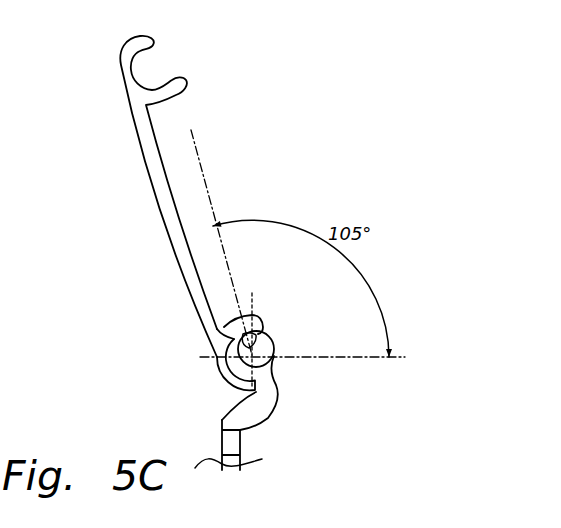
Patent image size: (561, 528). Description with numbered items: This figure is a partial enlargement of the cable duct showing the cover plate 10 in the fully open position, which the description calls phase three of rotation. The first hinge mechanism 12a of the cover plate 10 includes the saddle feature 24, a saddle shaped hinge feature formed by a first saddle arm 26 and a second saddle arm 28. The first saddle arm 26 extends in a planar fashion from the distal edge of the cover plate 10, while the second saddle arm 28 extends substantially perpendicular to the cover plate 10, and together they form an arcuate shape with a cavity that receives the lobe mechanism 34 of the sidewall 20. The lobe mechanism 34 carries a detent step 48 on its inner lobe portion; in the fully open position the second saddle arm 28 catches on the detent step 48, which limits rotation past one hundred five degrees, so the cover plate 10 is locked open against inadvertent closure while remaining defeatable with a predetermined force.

The cover plate 10 is at (168, 200).
The first hinge mechanism 12a is at (191, 330).
The saddle feature 24 is at (220, 350).
The lobe mechanism 34 is at (232, 367).
The second saddle arm 28 is at (252, 318).
The detent step 48 is at (268, 346).
The first saddle arm 26 is at (235, 394).
The sidewall 20 is at (238, 413).